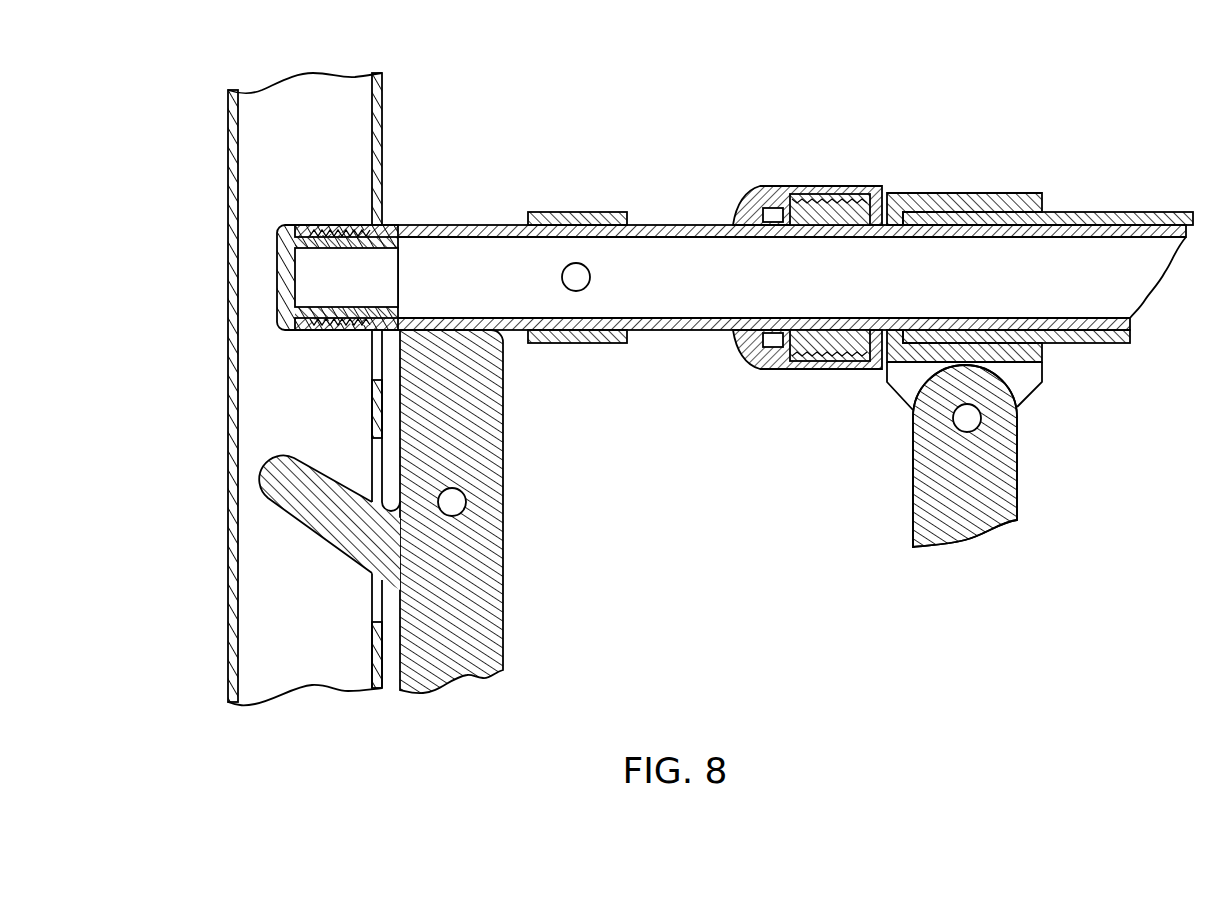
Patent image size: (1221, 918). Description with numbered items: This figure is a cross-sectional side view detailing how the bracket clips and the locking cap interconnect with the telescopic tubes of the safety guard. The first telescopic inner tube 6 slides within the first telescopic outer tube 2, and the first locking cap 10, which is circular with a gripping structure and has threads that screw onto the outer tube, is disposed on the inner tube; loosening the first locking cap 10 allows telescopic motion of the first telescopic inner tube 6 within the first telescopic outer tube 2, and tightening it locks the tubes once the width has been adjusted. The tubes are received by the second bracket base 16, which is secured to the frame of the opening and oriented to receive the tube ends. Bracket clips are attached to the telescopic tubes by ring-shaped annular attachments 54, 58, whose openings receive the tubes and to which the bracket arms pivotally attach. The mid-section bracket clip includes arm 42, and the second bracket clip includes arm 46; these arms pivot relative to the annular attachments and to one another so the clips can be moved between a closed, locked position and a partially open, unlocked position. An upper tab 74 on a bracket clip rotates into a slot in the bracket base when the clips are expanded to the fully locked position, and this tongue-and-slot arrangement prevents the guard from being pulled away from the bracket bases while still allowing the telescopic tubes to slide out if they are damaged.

The first telescopic outer tube 2 is at (1108, 212).
The first telescopic inner tube 6 is at (457, 225).
The first locking cap 10 is at (806, 186).
The second bracket base 16 is at (227, 243).
The arm 42 is at (975, 466).
The arm 46 is at (455, 404).
The annular attachment 54 is at (953, 193).
The annular attachment 58 is at (572, 212).
The upper tab 74 is at (282, 486).